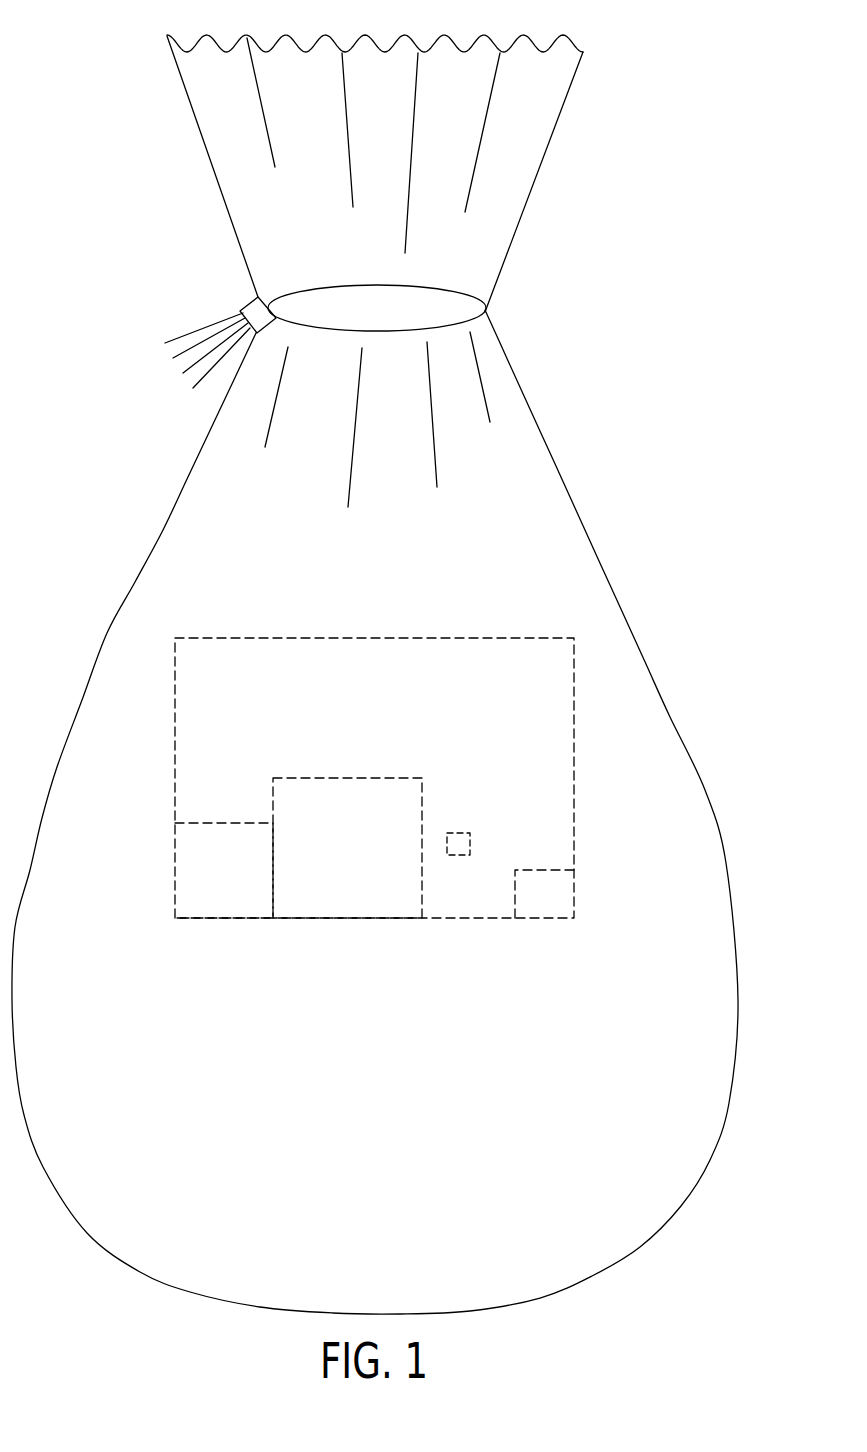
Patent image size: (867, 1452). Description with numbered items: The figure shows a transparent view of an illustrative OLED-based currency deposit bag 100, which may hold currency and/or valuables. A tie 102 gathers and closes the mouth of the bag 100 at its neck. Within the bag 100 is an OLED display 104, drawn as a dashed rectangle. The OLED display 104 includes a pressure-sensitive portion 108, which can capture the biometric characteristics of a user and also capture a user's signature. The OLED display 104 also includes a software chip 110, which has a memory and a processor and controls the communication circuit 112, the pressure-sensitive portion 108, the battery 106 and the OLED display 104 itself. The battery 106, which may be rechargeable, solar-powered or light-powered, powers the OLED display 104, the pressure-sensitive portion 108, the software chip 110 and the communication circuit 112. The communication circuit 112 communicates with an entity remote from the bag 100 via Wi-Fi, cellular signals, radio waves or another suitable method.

The OLED-based currency deposit bag 100 is at (66, 77).
The tie 102 is at (248, 312).
The OLED display 104 is at (186, 704).
The battery 106 is at (225, 910).
The pressure-sensitive portion 108 is at (348, 910).
The software chip 110 is at (458, 855).
The communication circuit 112 is at (547, 910).